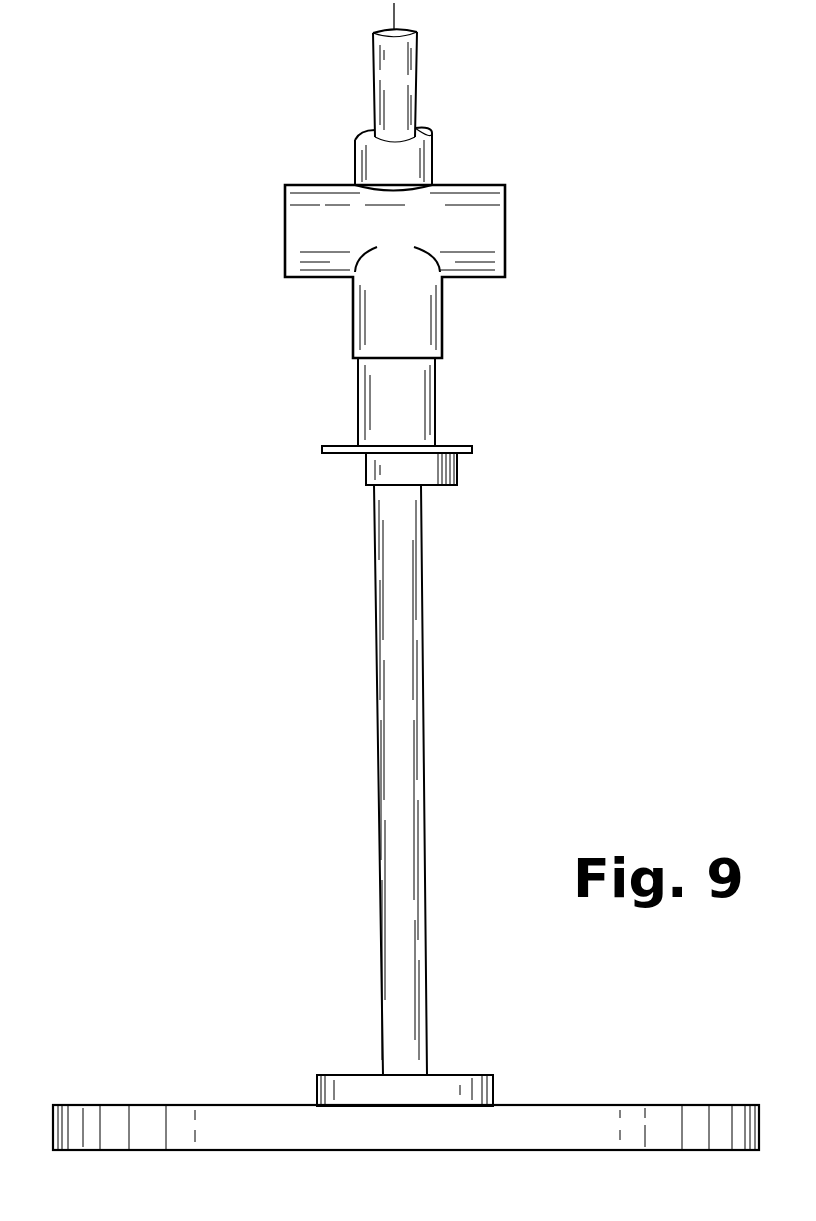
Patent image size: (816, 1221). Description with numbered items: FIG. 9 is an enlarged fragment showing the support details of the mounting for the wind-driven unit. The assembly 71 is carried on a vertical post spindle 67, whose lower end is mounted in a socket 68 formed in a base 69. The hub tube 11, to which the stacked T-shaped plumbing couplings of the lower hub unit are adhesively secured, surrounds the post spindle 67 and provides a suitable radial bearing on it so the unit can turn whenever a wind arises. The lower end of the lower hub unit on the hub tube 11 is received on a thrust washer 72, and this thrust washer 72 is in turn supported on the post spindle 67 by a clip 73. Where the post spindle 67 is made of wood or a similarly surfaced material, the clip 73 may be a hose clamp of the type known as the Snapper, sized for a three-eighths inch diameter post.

The hub tube 11 is at (433, 158).
The post spindle 67 is at (407, 77).
The socket 68 is at (470, 1075).
The base 69 is at (592, 1103).
The stand assembly 71 is at (465, 397).
The thrust washer 72 is at (335, 455).
The clip 73 is at (457, 474).